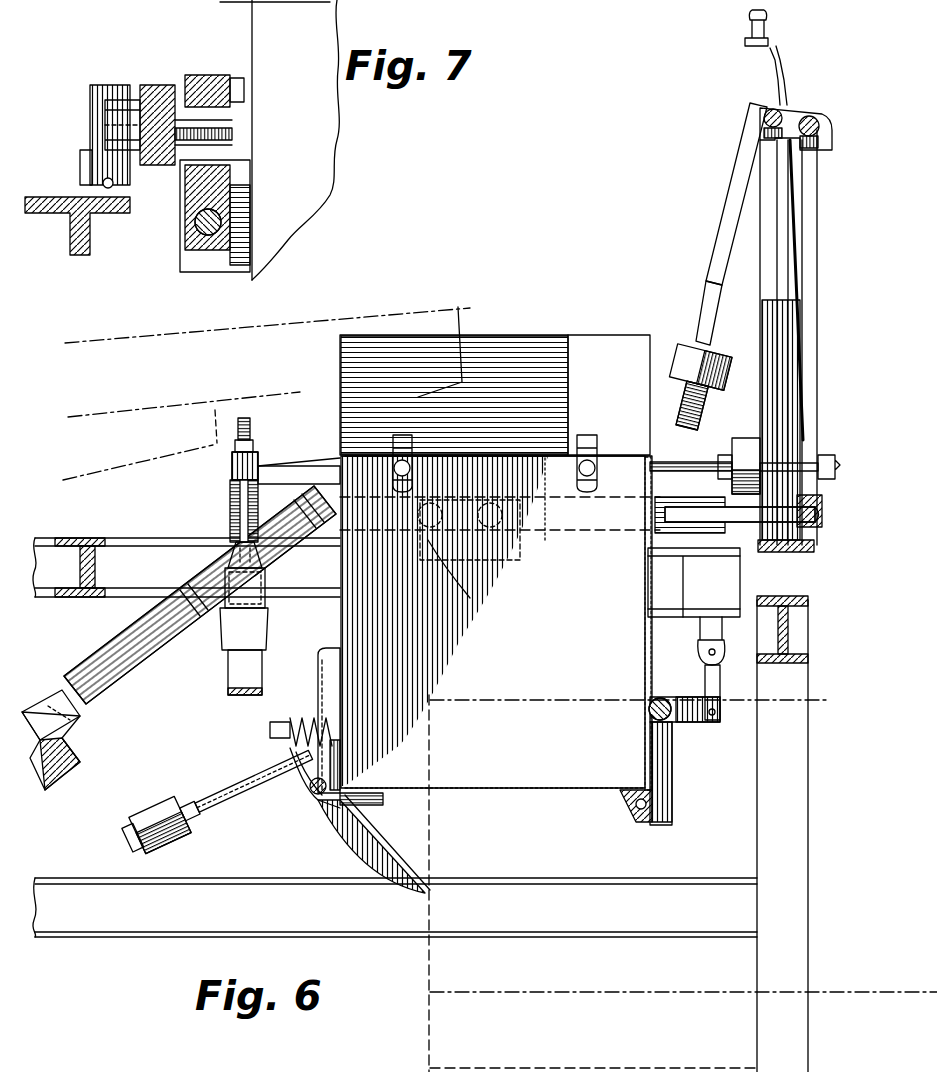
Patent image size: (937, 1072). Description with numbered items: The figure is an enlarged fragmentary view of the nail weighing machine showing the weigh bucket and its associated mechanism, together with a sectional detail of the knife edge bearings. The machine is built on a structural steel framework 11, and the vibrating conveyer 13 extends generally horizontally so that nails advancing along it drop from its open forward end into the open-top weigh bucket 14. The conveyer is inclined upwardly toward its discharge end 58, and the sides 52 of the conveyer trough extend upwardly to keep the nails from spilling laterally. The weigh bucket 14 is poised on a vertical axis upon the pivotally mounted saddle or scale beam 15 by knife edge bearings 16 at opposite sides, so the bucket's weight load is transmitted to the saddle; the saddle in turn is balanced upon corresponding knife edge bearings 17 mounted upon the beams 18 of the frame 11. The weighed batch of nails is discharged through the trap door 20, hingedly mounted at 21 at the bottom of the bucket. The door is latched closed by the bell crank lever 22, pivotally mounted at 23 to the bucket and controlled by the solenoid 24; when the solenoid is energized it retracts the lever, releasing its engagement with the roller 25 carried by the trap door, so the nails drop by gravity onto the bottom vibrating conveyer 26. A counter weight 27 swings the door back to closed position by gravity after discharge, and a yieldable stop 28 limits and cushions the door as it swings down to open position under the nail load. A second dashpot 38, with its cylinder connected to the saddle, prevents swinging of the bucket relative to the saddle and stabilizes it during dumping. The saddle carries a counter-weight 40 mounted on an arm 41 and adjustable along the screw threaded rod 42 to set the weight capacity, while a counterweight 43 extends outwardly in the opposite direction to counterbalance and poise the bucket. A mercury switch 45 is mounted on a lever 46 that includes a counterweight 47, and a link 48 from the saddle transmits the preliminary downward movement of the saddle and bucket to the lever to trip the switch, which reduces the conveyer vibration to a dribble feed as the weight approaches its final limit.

In FIG. 6, the structural steel framework 11 is at (772, 828).
In FIG. 6, the vibrating conveyer 13 is at (372, 308).
In FIG. 7, the weigh bucket 14 is at (324, 140).
In FIG. 6, the weigh bucket 14 is at (612, 452).
In FIG. 7, the saddle or scale beam 15 is at (163, 85).
In FIG. 6, the saddle or scale beam 15 is at (658, 510).
In FIG. 7, the knife edge bearings 16 is at (210, 102).
In FIG. 6, the knife edge bearings 16 is at (468, 596).
In FIG. 7, the knife edge bearings 17 is at (84, 112).
In FIG. 6, the knife edge bearings 17 is at (505, 515).
In FIG. 7, the beams 18 is at (88, 242).
In FIG. 6, the beams 18 is at (166, 548).
In FIG. 6, the trap door 20 is at (508, 790).
In FIG. 6, the hinge 21 is at (312, 806).
In FIG. 6, the bell crank lever 22 is at (672, 762).
In FIG. 6, the pivot 23 is at (660, 704).
In FIG. 6, the solenoid 24 is at (722, 582).
In FIG. 6, the roller 25 is at (634, 806).
In FIG. 6, the bottom vibrating conveyer 26 is at (425, 1002).
In FIG. 6, the counter weight 27 is at (150, 800).
In FIG. 6, the yieldable stop 28 is at (404, 866).
In FIG. 6, the second dashpot 38 is at (224, 644).
In FIG. 6, the counter-weight 40 is at (38, 748).
In FIG. 6, the arm 41 is at (128, 618).
In FIG. 6, the screw threaded rod 42 is at (50, 706).
In FIG. 6, the counterweight 43 is at (750, 436).
In FIG. 6, the mercury switch 45 is at (762, 32).
In FIG. 6, the lever 46 is at (800, 114).
In FIG. 6, the counterweight 47 is at (690, 346).
In FIG. 6, the link 48 is at (810, 285).
In FIG. 6, the sides of the conveyer trough 52 is at (244, 338).
In FIG. 6, the discharge end 58 is at (460, 326).